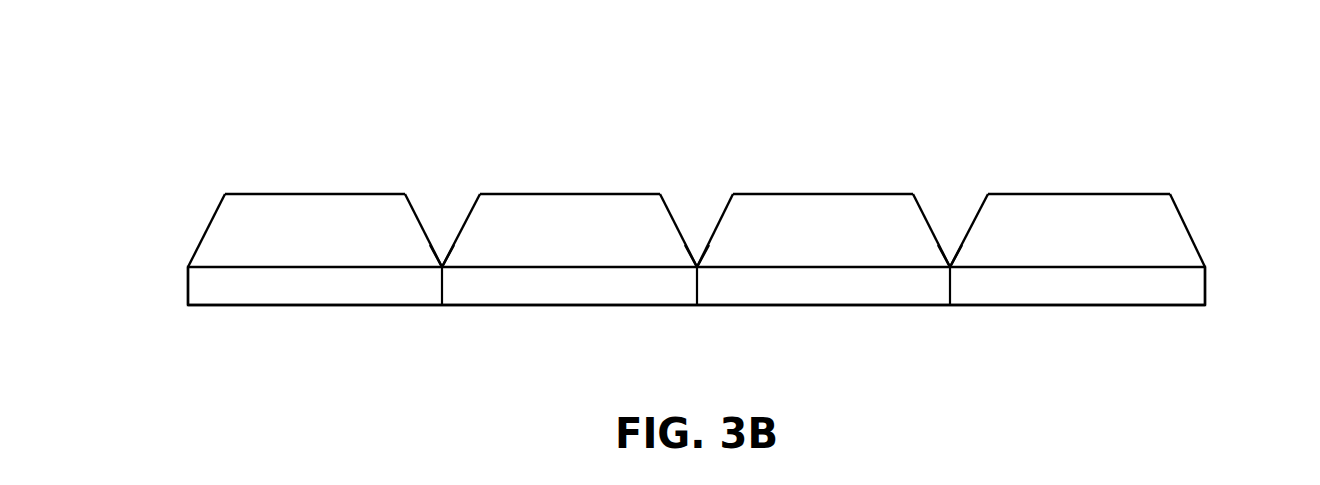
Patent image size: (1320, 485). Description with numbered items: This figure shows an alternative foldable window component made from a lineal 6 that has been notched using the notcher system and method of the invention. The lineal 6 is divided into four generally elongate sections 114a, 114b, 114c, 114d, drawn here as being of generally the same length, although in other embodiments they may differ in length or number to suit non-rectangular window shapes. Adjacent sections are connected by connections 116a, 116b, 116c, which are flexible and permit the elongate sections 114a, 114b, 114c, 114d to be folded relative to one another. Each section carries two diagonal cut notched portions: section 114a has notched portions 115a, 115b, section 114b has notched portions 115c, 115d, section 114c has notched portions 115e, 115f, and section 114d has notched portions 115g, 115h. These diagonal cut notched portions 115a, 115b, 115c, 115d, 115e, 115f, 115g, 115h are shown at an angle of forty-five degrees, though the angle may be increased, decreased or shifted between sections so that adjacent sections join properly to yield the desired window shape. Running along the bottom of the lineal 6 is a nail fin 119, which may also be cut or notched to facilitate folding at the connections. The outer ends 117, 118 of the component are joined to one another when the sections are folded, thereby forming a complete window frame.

The lineal 6 is at (555, 248).
The elongate section 114a is at (277, 213).
The elongate section 114b is at (530, 213).
The elongate section 114c is at (785, 213).
The elongate section 114d is at (1043, 223).
The diagonal cut notched portion 115a is at (207, 237).
The diagonal cut notched portion 115b is at (424, 230).
The diagonal cut notched portion 115c is at (463, 228).
The diagonal cut notched portion 115d is at (678, 230).
The diagonal cut notched portion 115e is at (716, 230).
The diagonal cut notched portion 115f is at (935, 230).
The diagonal cut notched portion 115g is at (971, 230).
The diagonal cut notched portion 115h is at (1193, 247).
The connection 116a is at (442, 265).
The connection 116b is at (697, 265).
The connection 116c is at (950, 265).
The end 117 is at (188, 283).
The end 118 is at (1205, 287).
The nail fin 119 is at (347, 284).